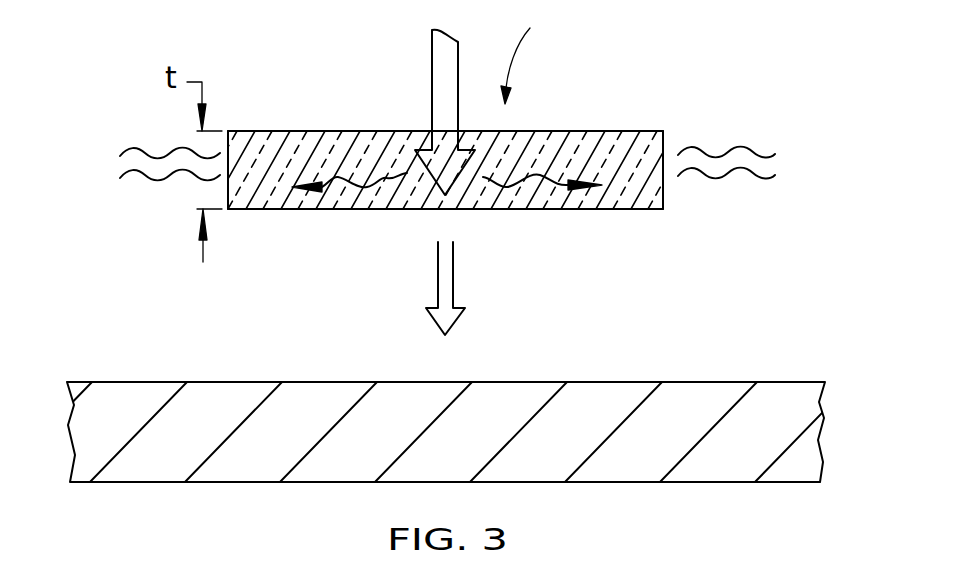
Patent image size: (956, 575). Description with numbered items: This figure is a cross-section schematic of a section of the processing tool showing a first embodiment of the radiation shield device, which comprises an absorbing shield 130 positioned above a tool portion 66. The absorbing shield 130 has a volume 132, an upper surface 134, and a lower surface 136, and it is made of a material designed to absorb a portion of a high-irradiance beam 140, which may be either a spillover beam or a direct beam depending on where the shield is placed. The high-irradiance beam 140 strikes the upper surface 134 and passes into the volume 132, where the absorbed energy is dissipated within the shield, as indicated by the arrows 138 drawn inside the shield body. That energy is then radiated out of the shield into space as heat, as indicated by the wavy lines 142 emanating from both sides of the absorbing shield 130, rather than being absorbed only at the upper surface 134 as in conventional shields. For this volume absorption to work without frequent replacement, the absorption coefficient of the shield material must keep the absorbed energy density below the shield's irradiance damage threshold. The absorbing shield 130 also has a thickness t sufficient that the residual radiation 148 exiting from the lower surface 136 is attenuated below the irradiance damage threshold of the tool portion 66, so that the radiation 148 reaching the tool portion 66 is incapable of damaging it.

The tool portion 66 is at (772, 382).
The absorbing shield 130 is at (545, 54).
The volume 132 is at (612, 195).
The upper surface 134 is at (641, 131).
The lower surface 136 is at (650, 209).
The arrows 138 is at (548, 175).
The high-irradiance beam 140 is at (432, 46).
The wavy lines 142 is at (135, 150).
The radiation 148 is at (438, 274).